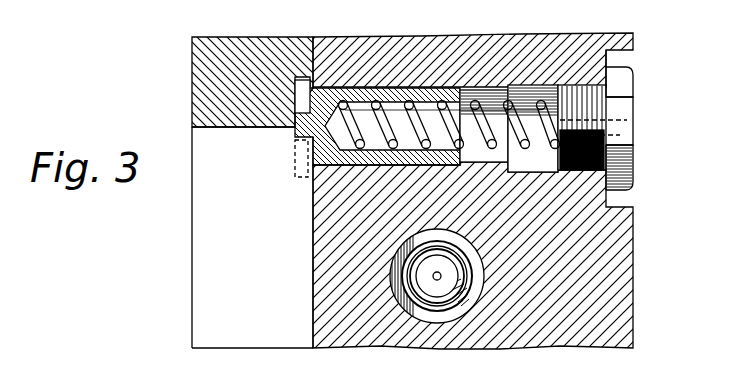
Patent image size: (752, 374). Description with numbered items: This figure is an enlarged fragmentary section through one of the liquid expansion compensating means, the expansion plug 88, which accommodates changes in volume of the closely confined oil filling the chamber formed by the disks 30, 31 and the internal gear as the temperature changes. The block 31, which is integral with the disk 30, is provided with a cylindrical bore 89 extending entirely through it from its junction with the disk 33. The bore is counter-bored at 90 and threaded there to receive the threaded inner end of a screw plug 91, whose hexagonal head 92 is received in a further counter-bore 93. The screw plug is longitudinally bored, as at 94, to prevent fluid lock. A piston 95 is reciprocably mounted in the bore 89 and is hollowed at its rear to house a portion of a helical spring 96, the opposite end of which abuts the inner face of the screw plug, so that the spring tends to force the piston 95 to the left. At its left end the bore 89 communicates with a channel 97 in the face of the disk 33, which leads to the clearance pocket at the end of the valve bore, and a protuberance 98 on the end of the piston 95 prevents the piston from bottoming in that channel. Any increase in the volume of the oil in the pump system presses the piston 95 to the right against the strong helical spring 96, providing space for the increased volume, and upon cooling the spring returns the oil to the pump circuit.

The disk 30 is at (627, 265).
The block 31 is at (525, 42).
The disk 33 is at (202, 198).
The expansion plug 88 is at (475, 163).
The cylindrical bore 89 is at (353, 167).
The counter-bore 90 is at (548, 85).
The screw plug 91 is at (632, 145).
The hexagonal head 92 is at (623, 82).
The further counter-bore 93 is at (622, 55).
The longitudinal bore 94 is at (632, 127).
The piston 95 is at (360, 90).
The helical spring 96 is at (418, 110).
The channel 97 is at (277, 55).
The protuberance 98 is at (295, 133).